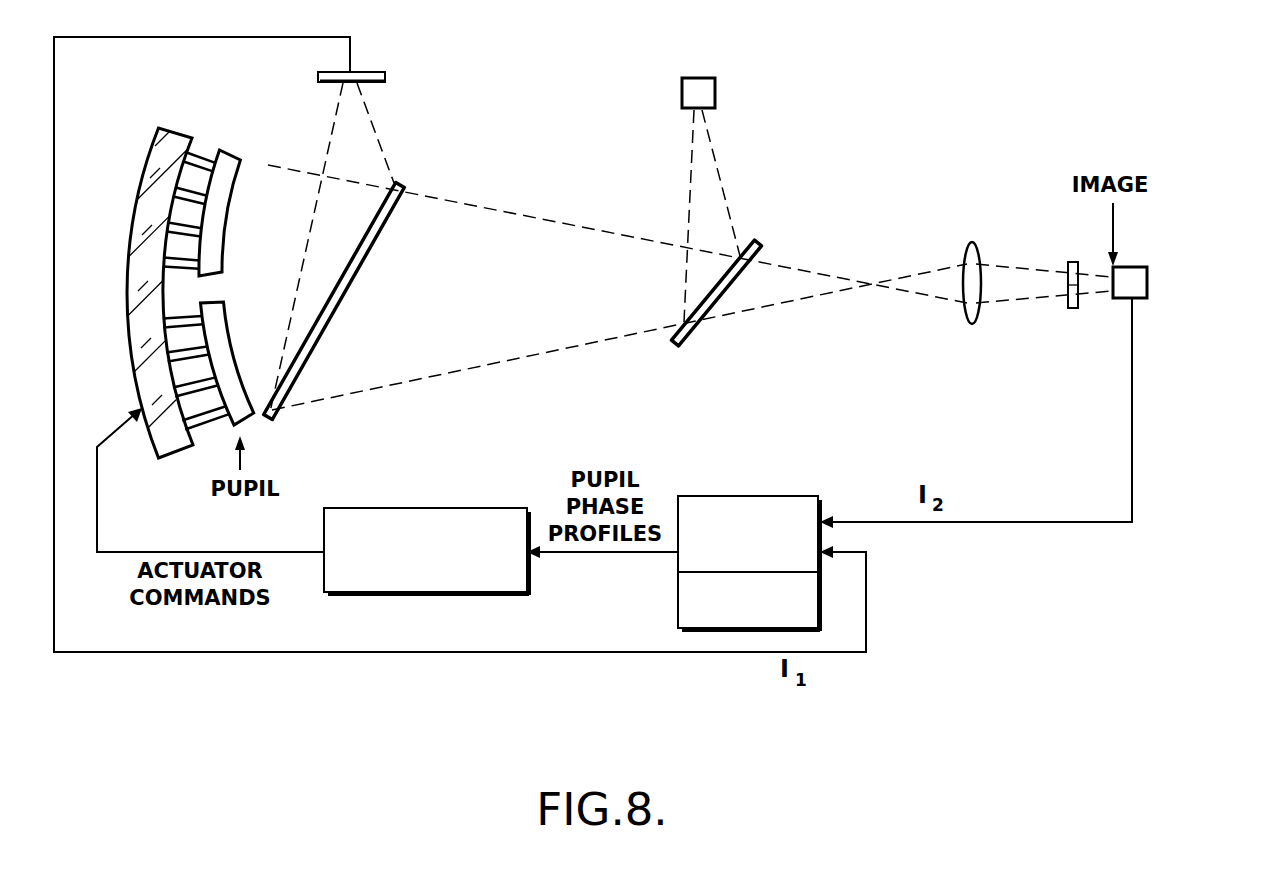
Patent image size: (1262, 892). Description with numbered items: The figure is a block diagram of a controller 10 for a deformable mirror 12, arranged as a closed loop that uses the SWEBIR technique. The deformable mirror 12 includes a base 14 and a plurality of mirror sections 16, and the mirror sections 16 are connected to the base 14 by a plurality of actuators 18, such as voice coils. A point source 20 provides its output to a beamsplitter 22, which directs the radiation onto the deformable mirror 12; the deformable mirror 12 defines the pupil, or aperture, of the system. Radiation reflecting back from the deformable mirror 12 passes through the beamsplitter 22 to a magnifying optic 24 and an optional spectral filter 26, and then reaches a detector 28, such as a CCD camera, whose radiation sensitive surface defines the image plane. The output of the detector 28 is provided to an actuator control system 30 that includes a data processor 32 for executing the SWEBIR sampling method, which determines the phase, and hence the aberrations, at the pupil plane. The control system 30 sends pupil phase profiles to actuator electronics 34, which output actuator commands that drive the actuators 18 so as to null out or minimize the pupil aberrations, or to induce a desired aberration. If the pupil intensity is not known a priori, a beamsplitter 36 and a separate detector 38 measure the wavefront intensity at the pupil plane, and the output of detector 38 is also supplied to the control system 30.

The controller 10 is at (873, 93).
The deformable mirror 12 is at (239, 126).
The base 14 is at (137, 195).
The mirror sections 16 is at (226, 273).
The actuators 18 is at (212, 152).
The point source 20 is at (683, 92).
The beamsplitter 22 is at (672, 340).
The magnifying optic 24 is at (977, 322).
The spectral filter 26 is at (1068, 307).
The detector 28 is at (1140, 298).
The actuator control system 30 is at (677, 557).
The data processor 32 is at (677, 594).
The actuator electronics 34 is at (490, 594).
The beamsplitter 36 is at (406, 190).
The detector 38 is at (386, 74).